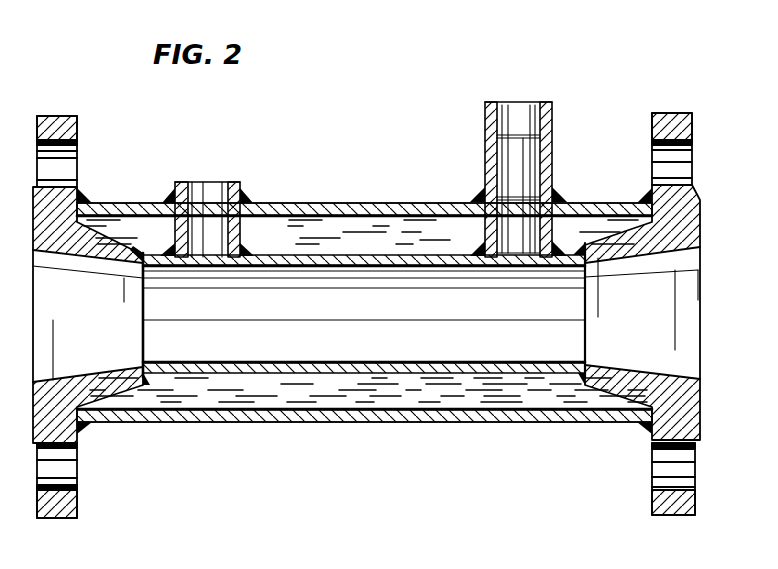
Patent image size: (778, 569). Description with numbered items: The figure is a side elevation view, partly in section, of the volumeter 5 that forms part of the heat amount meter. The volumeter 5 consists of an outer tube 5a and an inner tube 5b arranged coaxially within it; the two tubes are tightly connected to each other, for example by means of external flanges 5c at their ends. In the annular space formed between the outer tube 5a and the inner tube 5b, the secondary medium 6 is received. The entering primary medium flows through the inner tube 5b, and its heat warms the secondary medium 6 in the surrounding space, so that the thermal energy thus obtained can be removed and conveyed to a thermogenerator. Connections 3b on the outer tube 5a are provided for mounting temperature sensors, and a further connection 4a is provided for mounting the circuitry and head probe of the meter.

The connections 3b is at (238, 182).
The connection 4a is at (488, 122).
The volumeter 5 is at (461, 438).
The outer tube 5a is at (397, 421).
The inner tube 5b is at (440, 364).
The external flanges 5c is at (77, 124).
The secondary medium 6 is at (374, 233).